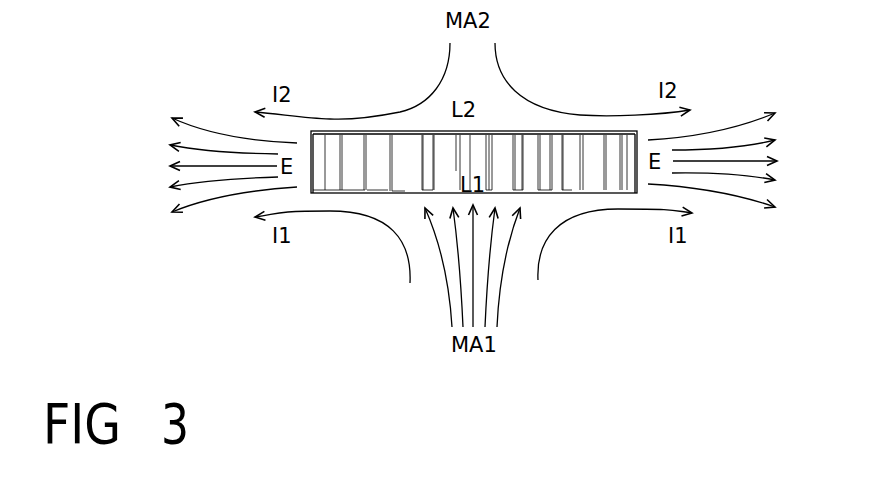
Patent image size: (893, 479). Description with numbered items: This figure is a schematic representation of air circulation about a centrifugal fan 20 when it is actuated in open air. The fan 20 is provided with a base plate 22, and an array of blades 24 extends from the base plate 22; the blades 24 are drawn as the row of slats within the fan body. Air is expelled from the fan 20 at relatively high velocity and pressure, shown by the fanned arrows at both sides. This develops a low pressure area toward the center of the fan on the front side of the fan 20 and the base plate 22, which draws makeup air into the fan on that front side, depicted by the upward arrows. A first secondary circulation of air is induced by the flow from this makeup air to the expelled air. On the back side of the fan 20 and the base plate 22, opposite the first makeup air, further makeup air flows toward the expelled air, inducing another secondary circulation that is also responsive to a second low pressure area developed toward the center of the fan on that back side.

The fan 20 is at (392, 202).
The base plate 22 is at (537, 128).
The blades 24 is at (570, 183).